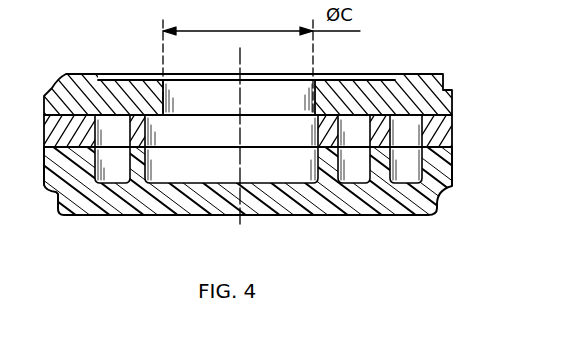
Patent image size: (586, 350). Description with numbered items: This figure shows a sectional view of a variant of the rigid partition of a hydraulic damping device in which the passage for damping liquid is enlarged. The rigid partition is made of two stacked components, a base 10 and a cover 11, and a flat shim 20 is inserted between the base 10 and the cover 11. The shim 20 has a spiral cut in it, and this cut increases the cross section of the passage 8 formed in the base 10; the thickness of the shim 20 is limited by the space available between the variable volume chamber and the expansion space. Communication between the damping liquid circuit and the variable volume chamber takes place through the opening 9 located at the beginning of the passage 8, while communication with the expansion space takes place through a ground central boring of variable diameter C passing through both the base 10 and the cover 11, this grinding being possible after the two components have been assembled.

The passage for damping liquid 8 is at (110, 167).
The opening 9 is at (410, 198).
The base 10 is at (328, 198).
The cover 11 is at (407, 93).
The shim 20 is at (452, 132).